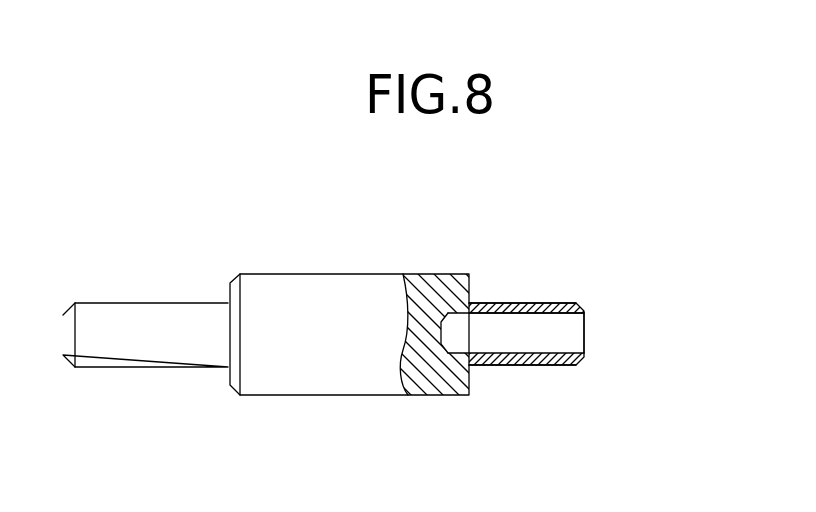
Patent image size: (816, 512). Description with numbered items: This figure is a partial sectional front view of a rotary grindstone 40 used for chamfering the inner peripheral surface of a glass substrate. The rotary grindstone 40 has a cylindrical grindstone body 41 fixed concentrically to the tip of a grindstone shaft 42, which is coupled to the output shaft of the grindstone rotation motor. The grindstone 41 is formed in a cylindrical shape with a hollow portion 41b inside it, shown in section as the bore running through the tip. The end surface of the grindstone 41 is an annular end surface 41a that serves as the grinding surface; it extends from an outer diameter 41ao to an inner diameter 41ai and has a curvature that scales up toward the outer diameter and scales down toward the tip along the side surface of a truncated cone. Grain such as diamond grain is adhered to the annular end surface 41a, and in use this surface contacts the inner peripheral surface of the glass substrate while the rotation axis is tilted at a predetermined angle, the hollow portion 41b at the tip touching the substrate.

The rotary grindstone 40 is at (258, 412).
The cylindrical grindstone body 41 is at (526, 303).
The annular end surface 41a is at (582, 357).
The outer diameter 41ao is at (574, 303).
The inner diameter 41ai is at (584, 312).
The hollow portion 41b is at (573, 333).
The grindstone shaft 42 is at (148, 303).